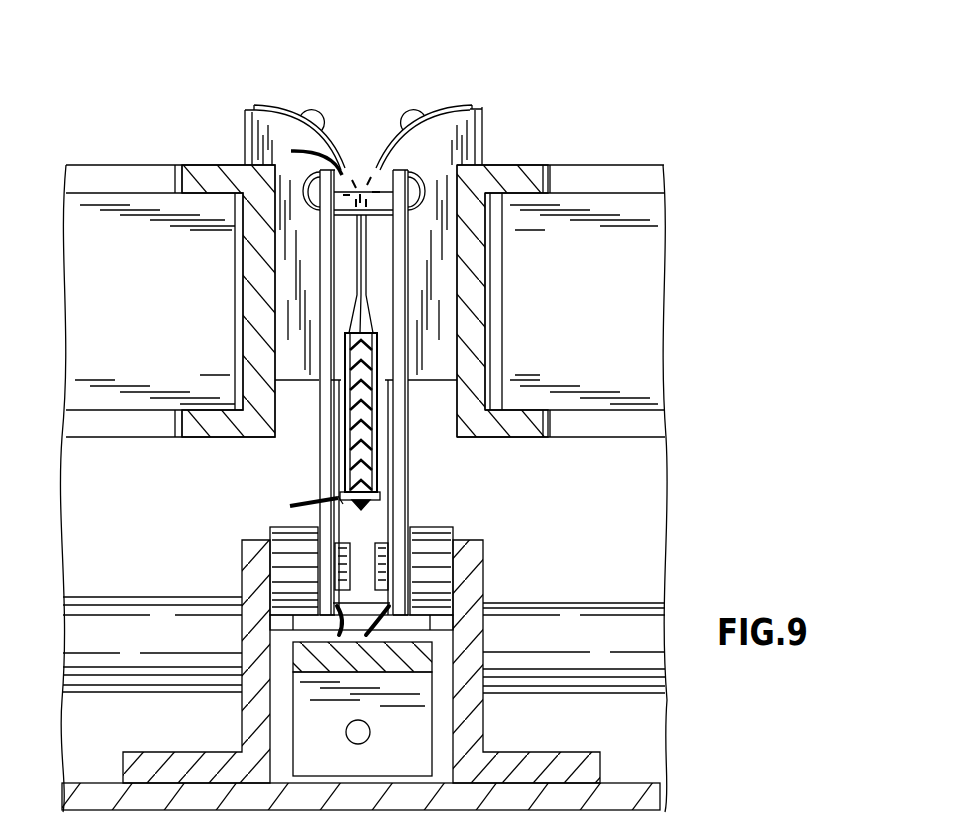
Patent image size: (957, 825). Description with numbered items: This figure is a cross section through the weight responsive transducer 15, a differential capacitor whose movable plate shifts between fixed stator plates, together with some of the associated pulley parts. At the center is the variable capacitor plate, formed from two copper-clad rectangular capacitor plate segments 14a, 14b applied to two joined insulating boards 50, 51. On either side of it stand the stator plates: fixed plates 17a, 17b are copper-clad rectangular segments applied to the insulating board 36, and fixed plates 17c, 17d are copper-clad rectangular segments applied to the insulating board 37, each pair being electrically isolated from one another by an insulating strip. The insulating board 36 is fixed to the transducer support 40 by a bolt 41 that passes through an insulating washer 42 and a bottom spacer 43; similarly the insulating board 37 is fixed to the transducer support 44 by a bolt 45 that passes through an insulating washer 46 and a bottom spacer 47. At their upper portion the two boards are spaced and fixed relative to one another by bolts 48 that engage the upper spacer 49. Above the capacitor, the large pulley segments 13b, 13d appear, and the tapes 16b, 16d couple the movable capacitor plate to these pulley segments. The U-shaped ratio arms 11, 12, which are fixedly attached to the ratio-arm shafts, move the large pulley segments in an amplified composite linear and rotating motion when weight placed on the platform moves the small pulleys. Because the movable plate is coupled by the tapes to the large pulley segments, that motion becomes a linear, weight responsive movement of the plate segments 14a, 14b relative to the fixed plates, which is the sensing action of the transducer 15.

The ratio arm 11 is at (92, 288).
The ratio arm 12 is at (622, 278).
The large pulley segment 13b is at (277, 150).
The large pulley segment 13d is at (463, 127).
The capacitor plate segment 14a is at (350, 427).
The capacitor plate segment 14b is at (377, 430).
The weight responsive transducer 15 is at (377, 128).
The tape 16b is at (300, 107).
The tape 16d is at (455, 107).
The fixed plate 17a is at (332, 252).
The fixed plate 17b is at (330, 467).
The fixed plate 17c is at (400, 243).
The fixed plate 17d is at (395, 477).
The insulating board 36 is at (320, 288).
The insulating board 37 is at (405, 287).
The transducer support 40 is at (252, 707).
The bolt 41 is at (348, 543).
The insulating washer 42 is at (338, 560).
The bottom spacer 43 is at (287, 577).
The transducer support 44 is at (475, 722).
The bolt 45 is at (375, 543).
The insulating washer 46 is at (387, 568).
The bottom spacer 47 is at (443, 582).
The bolt 48 is at (315, 166).
The upper spacer 49 is at (362, 170).
The insulating board 50 is at (347, 370).
The insulating board 51 is at (372, 372).